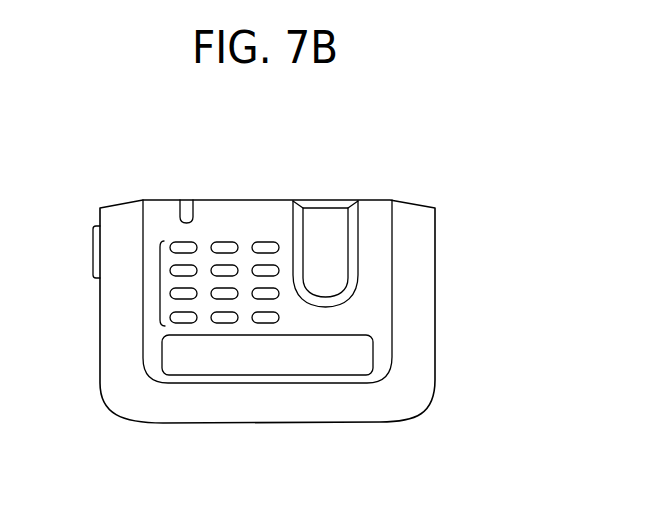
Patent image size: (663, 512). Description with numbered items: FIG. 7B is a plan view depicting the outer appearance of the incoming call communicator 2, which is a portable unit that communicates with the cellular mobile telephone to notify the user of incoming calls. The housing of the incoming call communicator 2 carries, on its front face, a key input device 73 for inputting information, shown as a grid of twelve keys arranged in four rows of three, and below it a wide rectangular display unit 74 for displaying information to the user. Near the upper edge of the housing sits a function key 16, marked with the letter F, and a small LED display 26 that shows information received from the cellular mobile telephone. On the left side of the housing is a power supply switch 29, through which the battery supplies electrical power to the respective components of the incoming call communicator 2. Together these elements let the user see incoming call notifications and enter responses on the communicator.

The incoming call communicator 2 is at (121, 205).
The power supply switch 29 is at (92, 266).
The LED display 26 is at (188, 200).
The function key 16 is at (325, 216).
The key input device 73 is at (158, 285).
The display unit 74 is at (340, 375).